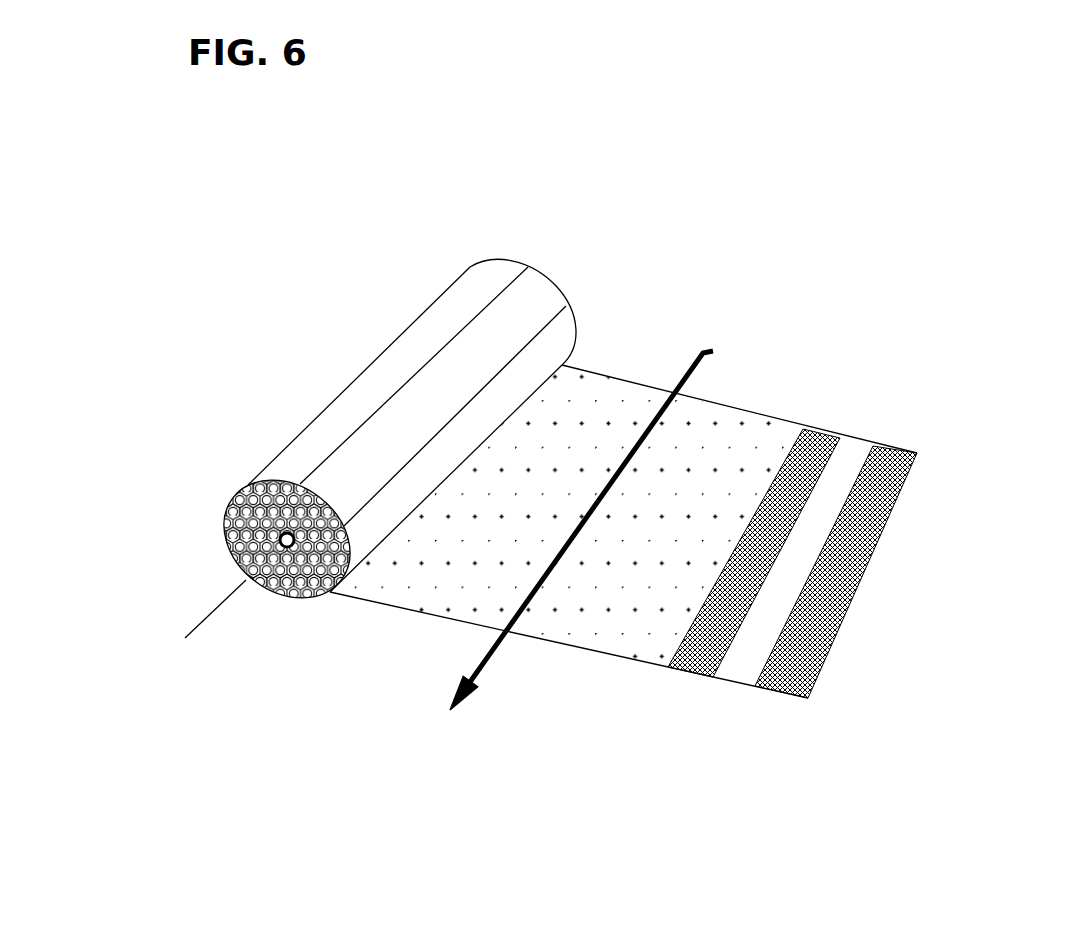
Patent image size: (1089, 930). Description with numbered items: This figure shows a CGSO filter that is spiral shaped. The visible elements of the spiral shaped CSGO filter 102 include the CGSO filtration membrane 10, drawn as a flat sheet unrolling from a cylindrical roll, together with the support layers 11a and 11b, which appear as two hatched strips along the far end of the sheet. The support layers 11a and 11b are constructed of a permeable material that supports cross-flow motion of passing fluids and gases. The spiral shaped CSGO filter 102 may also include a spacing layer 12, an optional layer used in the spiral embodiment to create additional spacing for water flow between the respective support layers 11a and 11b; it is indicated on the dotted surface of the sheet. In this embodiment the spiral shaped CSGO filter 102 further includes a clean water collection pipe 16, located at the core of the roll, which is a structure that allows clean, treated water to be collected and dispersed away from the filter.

The spiral shaped CSGO filter 102 is at (248, 103).
The CGSO filtration membrane 10 is at (853, 448).
The support layer 11a is at (817, 445).
The support layer 11b is at (897, 448).
The spacing layer 12 is at (602, 628).
The clean water collection pipe 16 is at (237, 588).